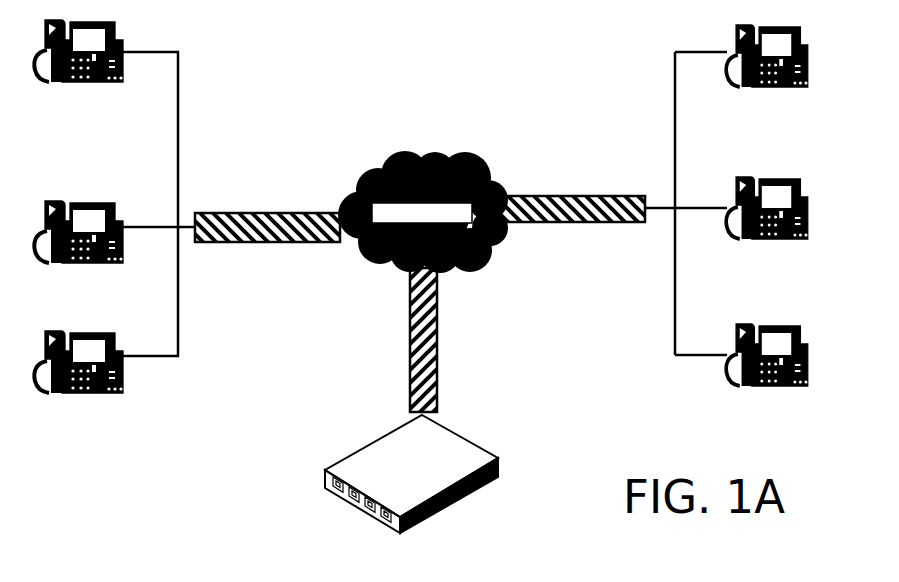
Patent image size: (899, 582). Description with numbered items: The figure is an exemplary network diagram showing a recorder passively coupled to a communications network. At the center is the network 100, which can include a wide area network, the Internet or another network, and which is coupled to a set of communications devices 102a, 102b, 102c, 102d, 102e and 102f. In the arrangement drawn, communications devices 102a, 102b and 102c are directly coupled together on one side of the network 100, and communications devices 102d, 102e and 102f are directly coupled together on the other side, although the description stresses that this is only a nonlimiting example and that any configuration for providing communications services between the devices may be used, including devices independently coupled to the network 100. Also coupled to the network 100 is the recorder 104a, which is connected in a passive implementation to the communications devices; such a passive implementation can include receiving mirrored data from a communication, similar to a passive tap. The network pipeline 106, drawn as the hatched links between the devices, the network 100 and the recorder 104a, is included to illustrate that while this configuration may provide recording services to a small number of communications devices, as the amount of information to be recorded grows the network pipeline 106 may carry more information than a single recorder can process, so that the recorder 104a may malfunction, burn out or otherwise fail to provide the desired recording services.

The network 100 is at (480, 252).
The communications device 102a is at (88, 82).
The communications device 102b is at (98, 262).
The communications device 102c is at (118, 392).
The communications device 102d is at (760, 85).
The communications device 102e is at (762, 242).
The communications device 102f is at (760, 387).
The recorder 104a is at (497, 477).
The network pipeline 106 is at (248, 240).